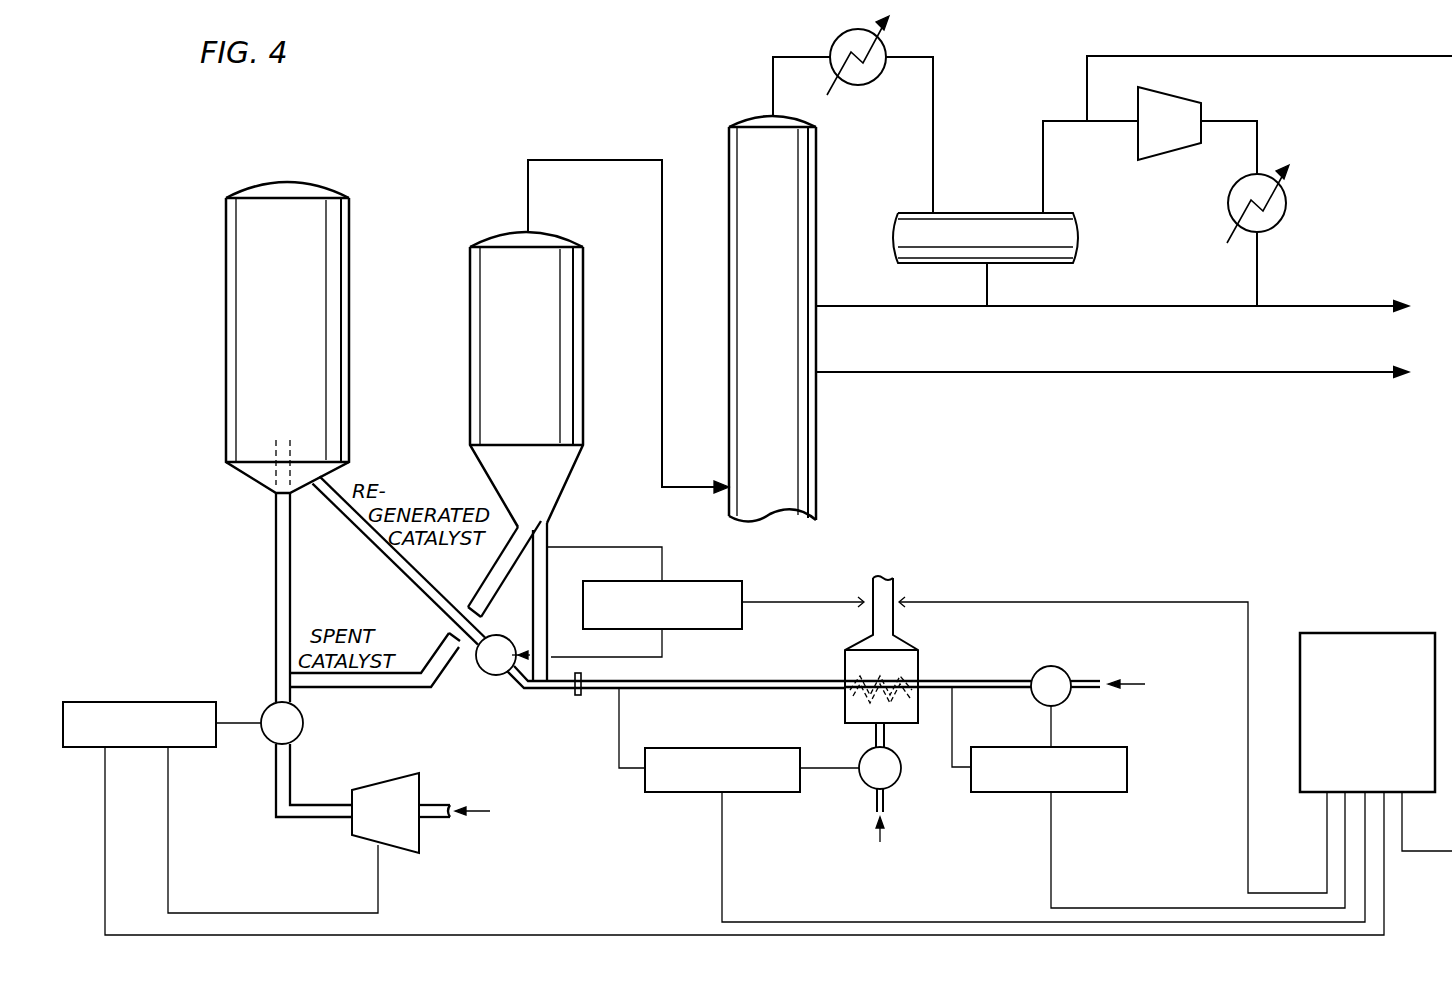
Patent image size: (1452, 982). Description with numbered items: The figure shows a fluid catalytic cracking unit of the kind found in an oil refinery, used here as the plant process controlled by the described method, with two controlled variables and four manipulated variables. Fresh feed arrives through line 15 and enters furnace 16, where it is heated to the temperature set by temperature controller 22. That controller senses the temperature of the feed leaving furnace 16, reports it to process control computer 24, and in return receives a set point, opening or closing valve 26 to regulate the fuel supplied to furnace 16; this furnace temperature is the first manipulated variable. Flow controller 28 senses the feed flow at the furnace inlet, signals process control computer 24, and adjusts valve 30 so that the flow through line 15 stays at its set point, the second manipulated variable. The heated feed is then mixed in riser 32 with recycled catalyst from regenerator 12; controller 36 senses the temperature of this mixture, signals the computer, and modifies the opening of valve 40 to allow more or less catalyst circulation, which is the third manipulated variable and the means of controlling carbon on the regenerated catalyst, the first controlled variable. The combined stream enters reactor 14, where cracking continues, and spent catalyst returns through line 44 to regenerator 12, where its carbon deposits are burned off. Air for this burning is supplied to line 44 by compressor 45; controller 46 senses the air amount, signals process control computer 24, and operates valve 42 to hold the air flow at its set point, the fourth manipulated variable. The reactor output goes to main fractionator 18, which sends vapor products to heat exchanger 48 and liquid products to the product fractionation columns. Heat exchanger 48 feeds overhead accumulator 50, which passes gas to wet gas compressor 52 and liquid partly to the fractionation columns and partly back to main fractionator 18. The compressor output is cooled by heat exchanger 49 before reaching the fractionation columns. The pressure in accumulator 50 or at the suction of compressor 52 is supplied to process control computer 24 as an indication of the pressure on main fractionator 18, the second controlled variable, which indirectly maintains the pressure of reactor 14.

The regenerator 12 is at (226, 280).
The reactor 14 is at (470, 289).
The line 15 is at (951, 681).
The furnace 16 is at (845, 655).
The main fractionator 18 is at (816, 182).
The temperature controller 22 is at (676, 795).
The process control computer 24 is at (1370, 633).
The valve 26 is at (895, 785).
The flow controller 28 is at (1098, 793).
The valve 30 is at (1055, 666).
The riser 32 is at (548, 527).
The controller 36 is at (695, 581).
The valve 40 is at (481, 694).
The valve 42 is at (303, 722).
The line 44 is at (276, 603).
The compressor 45 is at (398, 781).
The controller 46 is at (122, 702).
The heat exchanger 48 is at (876, 84).
The heat exchanger 49 is at (1287, 212).
The overhead accumulator 50 is at (988, 213).
The wet gas compressor 52 is at (1173, 156).